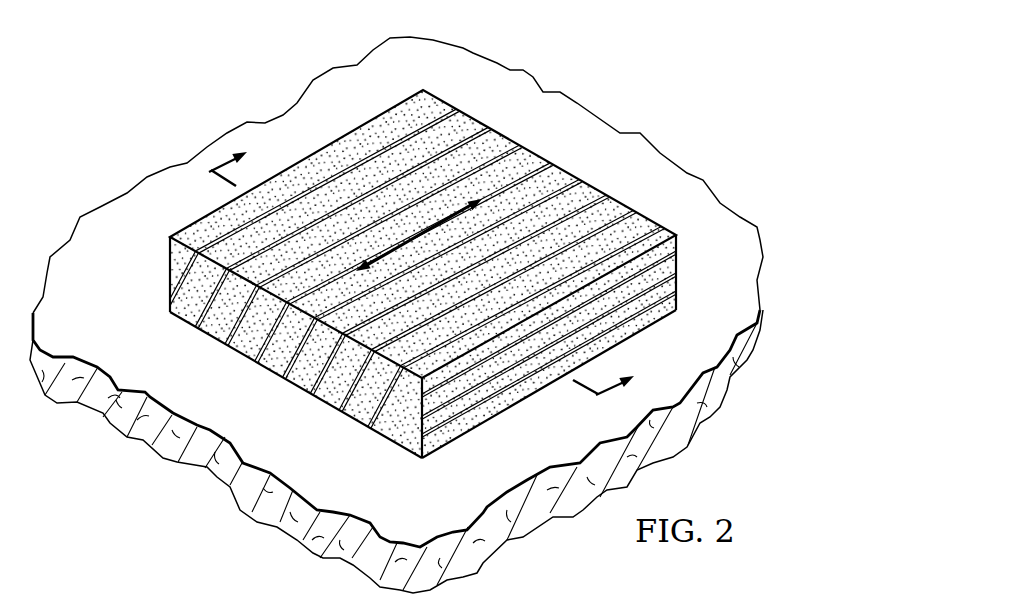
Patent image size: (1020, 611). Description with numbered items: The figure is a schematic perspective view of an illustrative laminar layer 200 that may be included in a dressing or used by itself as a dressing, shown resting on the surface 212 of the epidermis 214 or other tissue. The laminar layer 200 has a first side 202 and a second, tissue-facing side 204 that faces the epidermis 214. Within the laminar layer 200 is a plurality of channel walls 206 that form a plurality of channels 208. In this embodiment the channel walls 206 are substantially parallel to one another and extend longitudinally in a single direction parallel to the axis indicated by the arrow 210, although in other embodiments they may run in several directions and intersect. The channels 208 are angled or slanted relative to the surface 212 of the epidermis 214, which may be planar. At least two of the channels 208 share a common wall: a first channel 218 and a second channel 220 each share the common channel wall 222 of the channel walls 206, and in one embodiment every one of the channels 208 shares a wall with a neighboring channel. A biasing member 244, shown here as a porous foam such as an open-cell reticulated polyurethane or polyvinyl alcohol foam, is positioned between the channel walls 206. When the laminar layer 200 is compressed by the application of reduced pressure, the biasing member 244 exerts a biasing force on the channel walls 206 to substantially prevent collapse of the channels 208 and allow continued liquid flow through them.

The laminar layer 200 is at (650, 66).
The first side 202 is at (545, 160).
The second, tissue-facing side 204 is at (496, 410).
The channel walls 206 is at (173, 268).
The channels 208 is at (173, 303).
The arrow 210 is at (414, 236).
The surface 212 is at (332, 70).
The epidermis 214 is at (693, 430).
The first channel 218 is at (207, 330).
The second channel 220 is at (222, 342).
The common channel wall 222 is at (222, 335).
The biasing member 244 is at (462, 113).